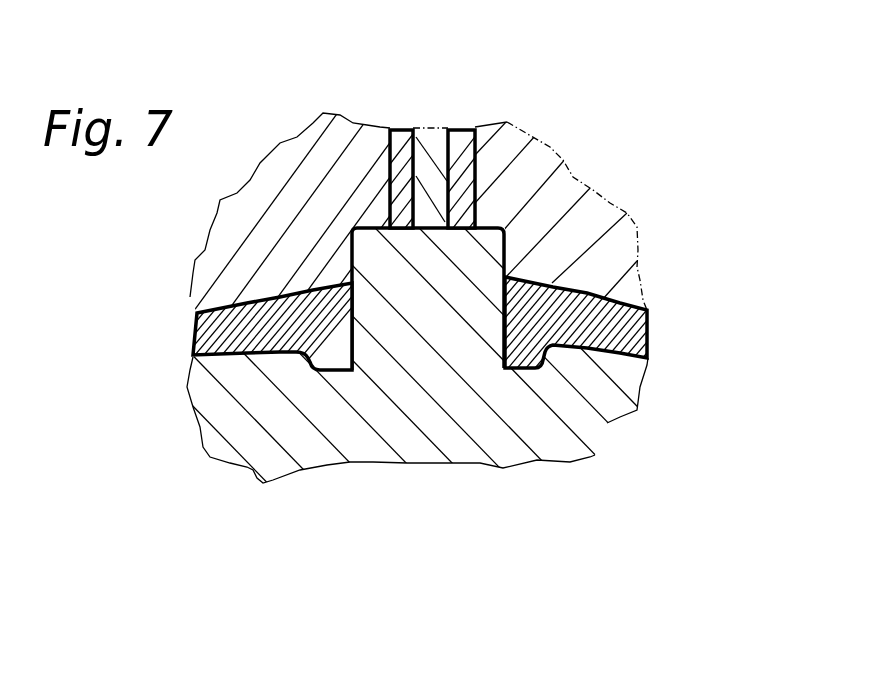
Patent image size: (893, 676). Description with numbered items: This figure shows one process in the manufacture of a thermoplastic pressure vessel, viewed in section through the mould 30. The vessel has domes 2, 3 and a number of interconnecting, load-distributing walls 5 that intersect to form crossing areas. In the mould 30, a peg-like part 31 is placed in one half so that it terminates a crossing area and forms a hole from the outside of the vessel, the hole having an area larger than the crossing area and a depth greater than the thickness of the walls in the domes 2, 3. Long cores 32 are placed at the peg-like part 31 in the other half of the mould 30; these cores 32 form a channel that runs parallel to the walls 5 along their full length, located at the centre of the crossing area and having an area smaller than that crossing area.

The dome 2 is at (476, 327).
The dome 3 is at (640, 330).
The walls 5 is at (401, 128).
The mould 30 is at (736, 193).
The peg-like parts 31 is at (418, 310).
The long cores 32 is at (433, 173).